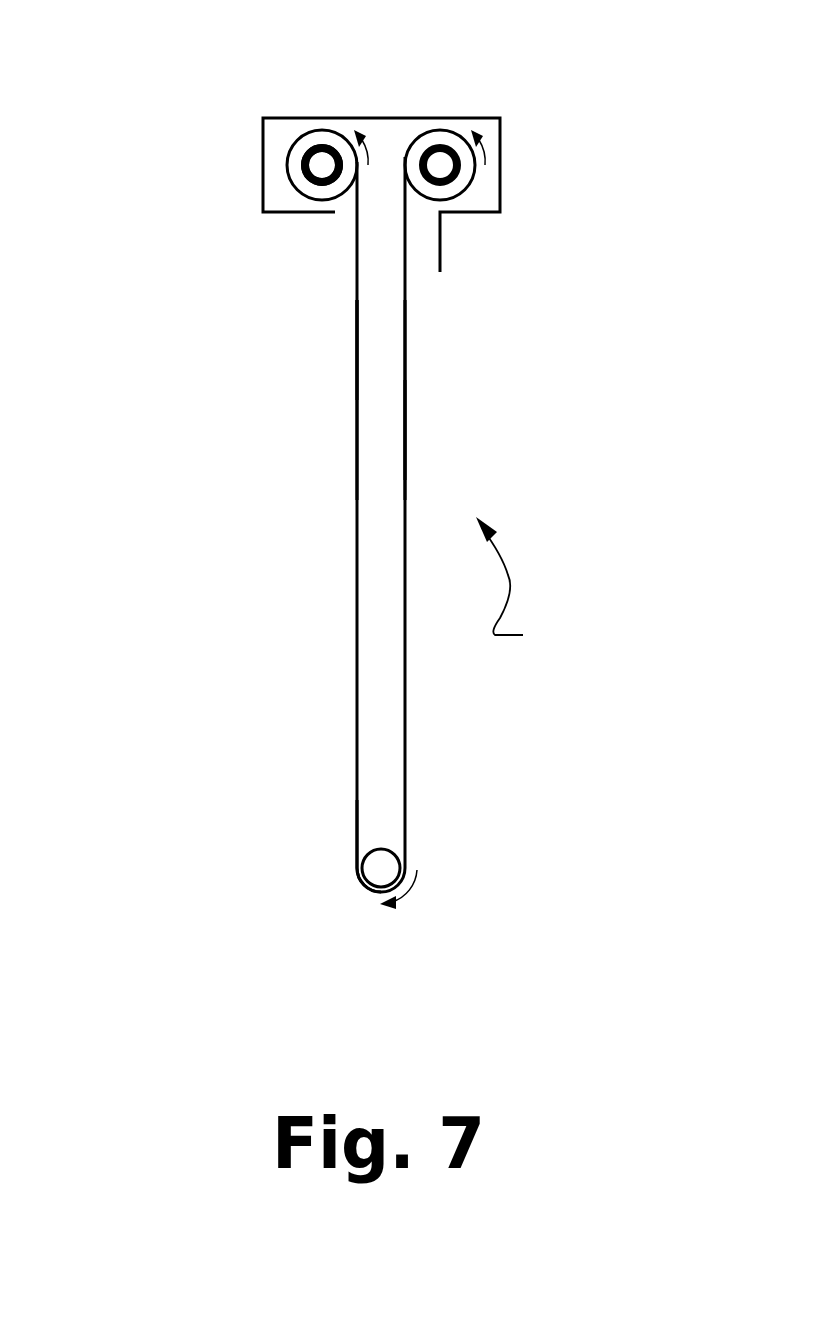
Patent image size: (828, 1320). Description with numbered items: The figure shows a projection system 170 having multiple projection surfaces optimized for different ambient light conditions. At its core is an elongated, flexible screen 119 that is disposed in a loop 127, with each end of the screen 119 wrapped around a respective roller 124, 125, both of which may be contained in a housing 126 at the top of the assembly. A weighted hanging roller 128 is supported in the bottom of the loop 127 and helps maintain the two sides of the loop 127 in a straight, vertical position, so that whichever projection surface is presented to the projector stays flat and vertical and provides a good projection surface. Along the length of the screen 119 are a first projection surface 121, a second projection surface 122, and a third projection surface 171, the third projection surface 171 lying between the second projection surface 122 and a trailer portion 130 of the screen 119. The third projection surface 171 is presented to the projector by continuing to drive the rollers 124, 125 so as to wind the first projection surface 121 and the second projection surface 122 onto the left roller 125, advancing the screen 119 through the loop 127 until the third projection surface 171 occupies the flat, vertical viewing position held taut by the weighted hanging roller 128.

The screen 119 is at (352, 624).
The first projection surface 121 is at (302, 135).
The second projection surface 122 is at (357, 325).
The roller 124 is at (440, 165).
The left roller 125 is at (322, 165).
The housing 126 is at (382, 117).
The loop 127 is at (358, 358).
The weighted hanging roller 128 is at (381, 868).
The trailer portion 130 is at (405, 434).
The projection system 170 is at (530, 583).
The third projection surface 171 is at (357, 843).